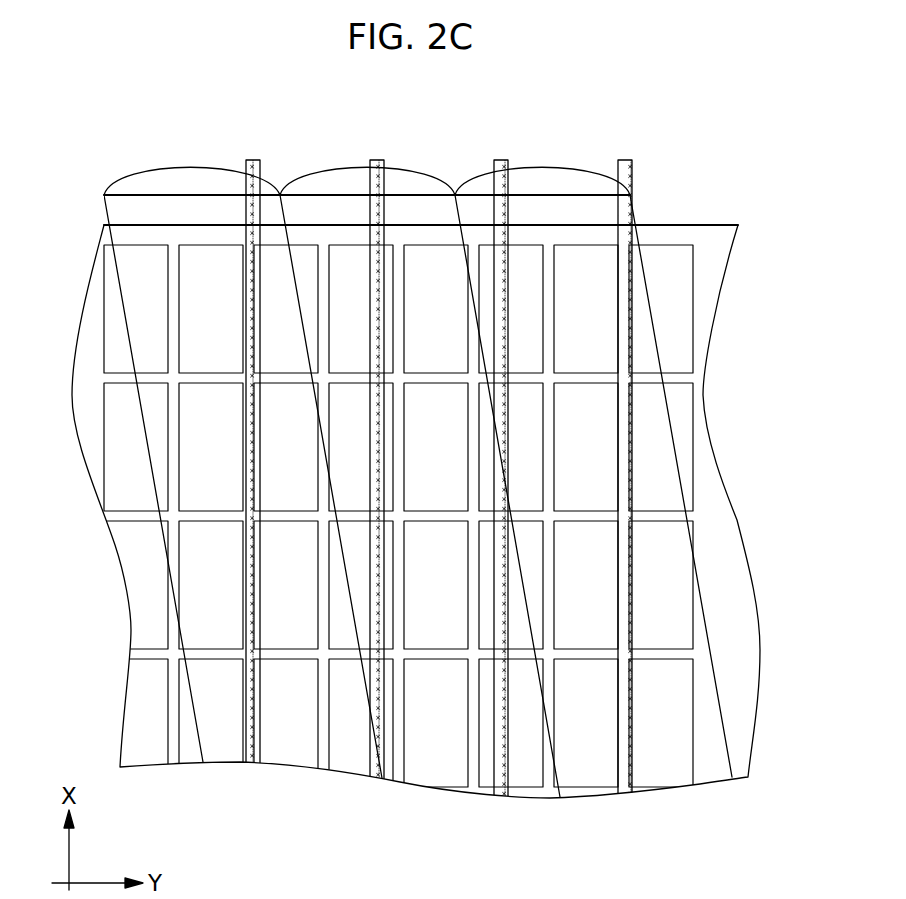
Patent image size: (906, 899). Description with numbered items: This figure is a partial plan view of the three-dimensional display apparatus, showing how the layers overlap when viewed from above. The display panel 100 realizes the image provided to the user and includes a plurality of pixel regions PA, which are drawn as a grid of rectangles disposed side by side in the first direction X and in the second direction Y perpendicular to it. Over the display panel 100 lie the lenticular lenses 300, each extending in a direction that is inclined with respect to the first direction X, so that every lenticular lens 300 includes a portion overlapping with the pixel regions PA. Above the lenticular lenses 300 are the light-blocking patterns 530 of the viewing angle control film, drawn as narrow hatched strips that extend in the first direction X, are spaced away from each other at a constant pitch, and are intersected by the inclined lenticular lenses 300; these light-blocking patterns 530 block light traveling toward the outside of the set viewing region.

The display panel 100 is at (703, 212).
The pixel regions PA is at (695, 313).
The lenticular lenses 300 is at (542, 178).
The light-blocking patterns 530 is at (378, 160).